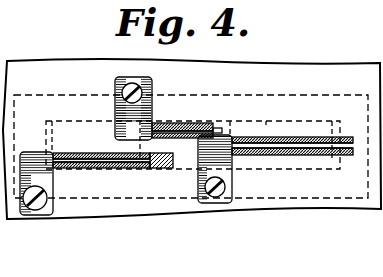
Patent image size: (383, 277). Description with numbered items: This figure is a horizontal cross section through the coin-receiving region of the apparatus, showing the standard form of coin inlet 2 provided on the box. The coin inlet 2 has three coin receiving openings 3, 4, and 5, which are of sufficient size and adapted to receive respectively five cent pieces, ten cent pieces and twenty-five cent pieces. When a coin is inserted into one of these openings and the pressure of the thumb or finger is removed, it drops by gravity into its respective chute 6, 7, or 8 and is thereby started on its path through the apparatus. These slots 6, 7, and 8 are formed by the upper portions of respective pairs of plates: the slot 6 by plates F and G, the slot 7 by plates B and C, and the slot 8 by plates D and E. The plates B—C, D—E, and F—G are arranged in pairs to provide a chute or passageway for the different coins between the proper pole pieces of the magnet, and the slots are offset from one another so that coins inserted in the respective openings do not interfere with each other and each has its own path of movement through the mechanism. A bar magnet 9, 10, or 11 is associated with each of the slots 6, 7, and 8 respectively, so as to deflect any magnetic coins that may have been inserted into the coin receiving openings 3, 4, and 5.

The coin inlet 2 is at (290, 96).
The coin receiving opening 3 is at (93, 120).
The coin receiving opening 4 is at (162, 120).
The coin receiving opening 5 is at (266, 128).
The chute 6 is at (92, 162).
The chute 7 is at (172, 133).
The chute 8 is at (283, 150).
The bar magnet 9 is at (53, 183).
The bar magnet 10 is at (115, 106).
The bar magnet 11 is at (220, 160).
The plate B is at (198, 128).
The plate C is at (213, 130).
The plate D is at (322, 145).
The plate E is at (312, 157).
The plate F is at (65, 152).
The plate G is at (105, 168).